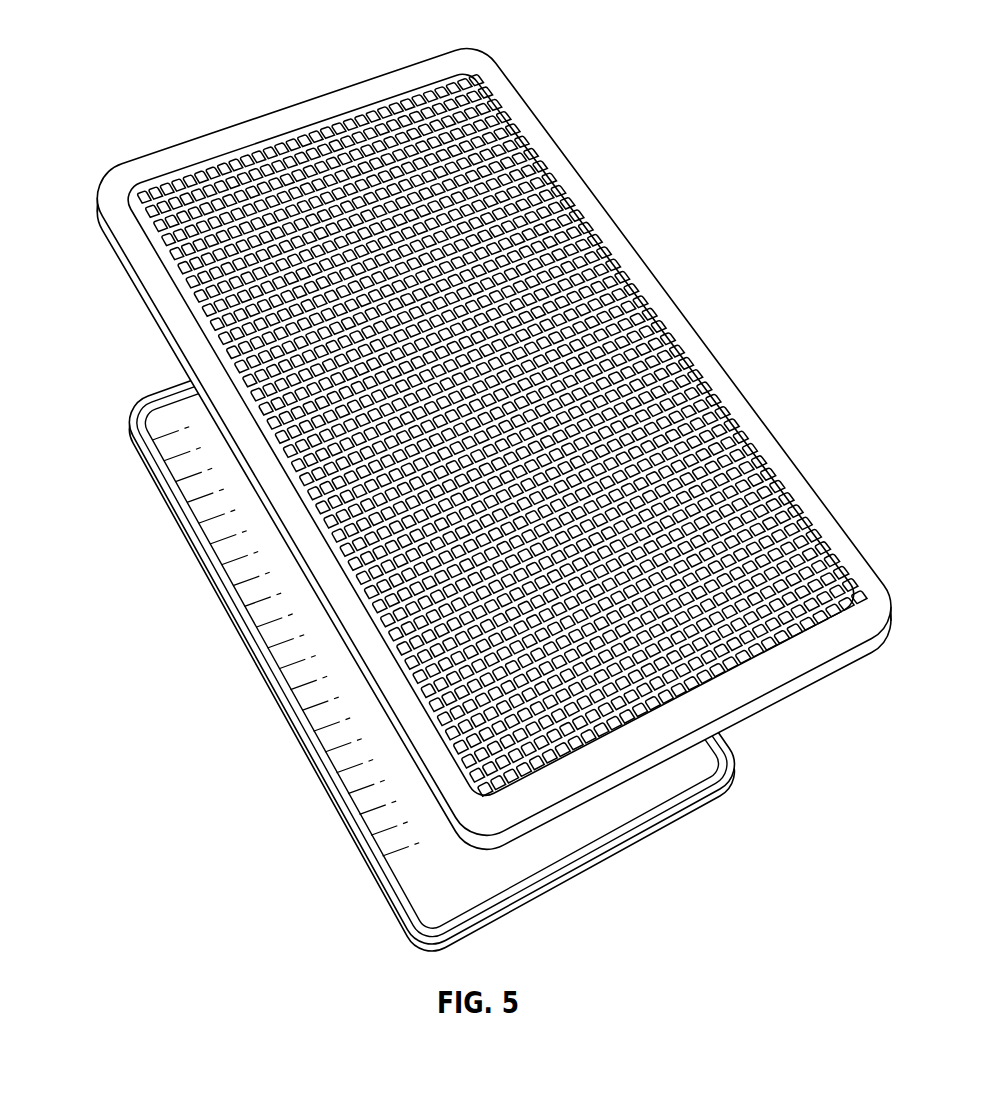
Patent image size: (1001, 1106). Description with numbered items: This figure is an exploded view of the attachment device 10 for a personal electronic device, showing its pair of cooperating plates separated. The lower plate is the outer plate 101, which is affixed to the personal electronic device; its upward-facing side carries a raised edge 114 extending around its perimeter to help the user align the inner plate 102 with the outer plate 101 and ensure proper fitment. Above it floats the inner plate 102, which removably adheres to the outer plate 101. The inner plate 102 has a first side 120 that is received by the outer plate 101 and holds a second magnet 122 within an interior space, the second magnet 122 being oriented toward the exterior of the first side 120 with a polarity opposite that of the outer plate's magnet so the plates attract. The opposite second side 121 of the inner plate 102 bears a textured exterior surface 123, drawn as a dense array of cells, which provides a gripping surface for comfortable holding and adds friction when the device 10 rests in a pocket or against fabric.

The device 10 is at (140, 48).
The outer plate 101 is at (141, 664).
The inner plate 102 is at (582, 86).
The raised edge 114 is at (344, 852).
The first side 120 is at (822, 683).
The second side 121 is at (723, 372).
The second magnet 122 is at (148, 318).
The textured exterior surface 123 is at (797, 515).